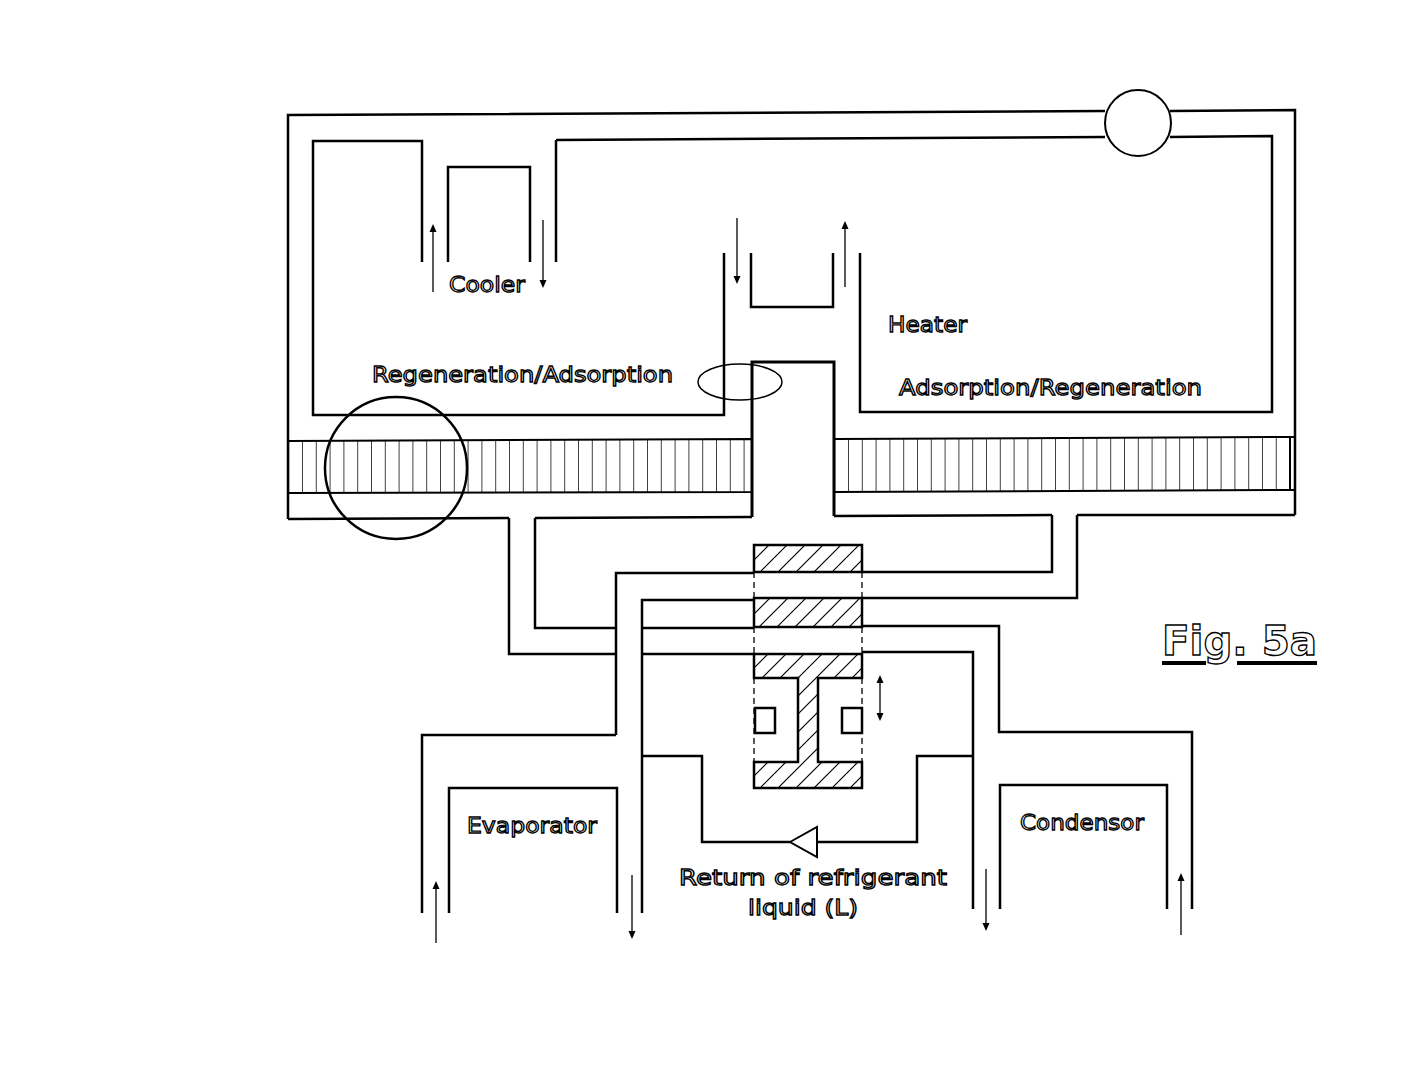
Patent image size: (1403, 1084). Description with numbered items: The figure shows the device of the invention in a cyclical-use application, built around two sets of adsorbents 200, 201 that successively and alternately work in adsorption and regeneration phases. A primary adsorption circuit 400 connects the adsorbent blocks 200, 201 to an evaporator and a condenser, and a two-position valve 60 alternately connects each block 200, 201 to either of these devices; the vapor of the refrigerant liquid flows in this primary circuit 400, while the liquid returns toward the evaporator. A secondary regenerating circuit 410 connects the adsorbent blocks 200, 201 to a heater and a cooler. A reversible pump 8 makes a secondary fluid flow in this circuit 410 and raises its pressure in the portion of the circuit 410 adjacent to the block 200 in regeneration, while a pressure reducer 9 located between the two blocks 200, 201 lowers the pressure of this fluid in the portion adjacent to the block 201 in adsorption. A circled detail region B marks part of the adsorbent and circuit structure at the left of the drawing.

The reversible pump 8 is at (1160, 93).
The pressure reducer 9 is at (725, 382).
The secondary regenerating circuit 410 is at (309, 432).
The adsorbent block 200 is at (308, 467).
The adsorbent block 201 is at (1283, 460).
The primary adsorption circuit 400 is at (293, 507).
The detail region B is at (385, 538).
The two-position valve 60 is at (860, 660).